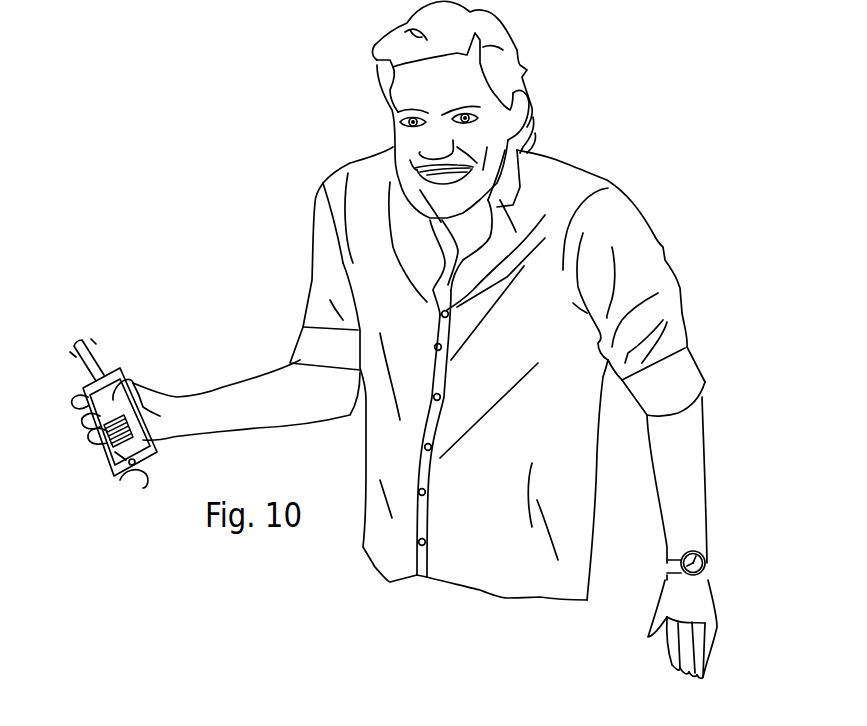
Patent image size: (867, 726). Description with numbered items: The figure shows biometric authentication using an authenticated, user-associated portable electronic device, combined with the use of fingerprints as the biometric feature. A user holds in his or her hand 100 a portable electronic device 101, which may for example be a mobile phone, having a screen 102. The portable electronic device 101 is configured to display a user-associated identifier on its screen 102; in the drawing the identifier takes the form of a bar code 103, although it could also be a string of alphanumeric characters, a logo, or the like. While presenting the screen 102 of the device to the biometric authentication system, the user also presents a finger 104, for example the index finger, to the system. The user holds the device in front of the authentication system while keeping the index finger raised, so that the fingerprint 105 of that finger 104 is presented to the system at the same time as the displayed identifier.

The hand 100 is at (175, 379).
The portable electronic device 101 is at (147, 470).
The screen 102 is at (113, 477).
The bar code 103 is at (107, 450).
The finger 104 is at (110, 363).
The fingerprint 105 is at (77, 352).